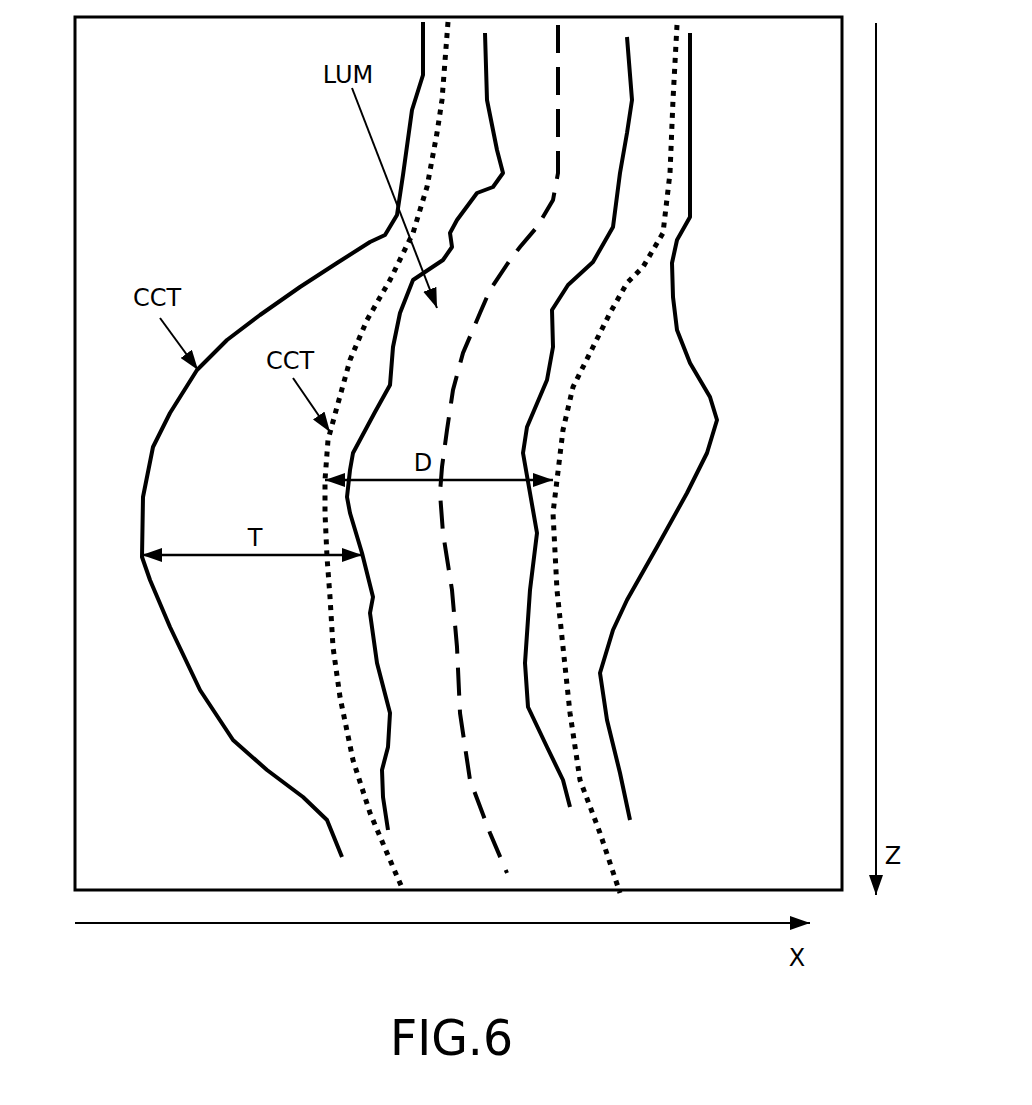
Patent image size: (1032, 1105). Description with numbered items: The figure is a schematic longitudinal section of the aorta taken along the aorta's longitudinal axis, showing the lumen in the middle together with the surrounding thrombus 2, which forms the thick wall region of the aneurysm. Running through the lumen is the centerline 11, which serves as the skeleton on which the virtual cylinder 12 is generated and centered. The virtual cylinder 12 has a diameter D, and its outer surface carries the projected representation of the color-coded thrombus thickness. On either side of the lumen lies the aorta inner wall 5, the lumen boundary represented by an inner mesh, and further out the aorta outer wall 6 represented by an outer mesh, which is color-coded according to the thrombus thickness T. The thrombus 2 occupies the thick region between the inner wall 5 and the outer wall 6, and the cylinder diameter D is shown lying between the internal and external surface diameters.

The thrombus 2 is at (257, 637).
The aorta inner wall 5 is at (748, 116).
The aorta outer wall 6 is at (200, 702).
The centerline 11 is at (472, 333).
The virtual cylinder 12 is at (565, 440).